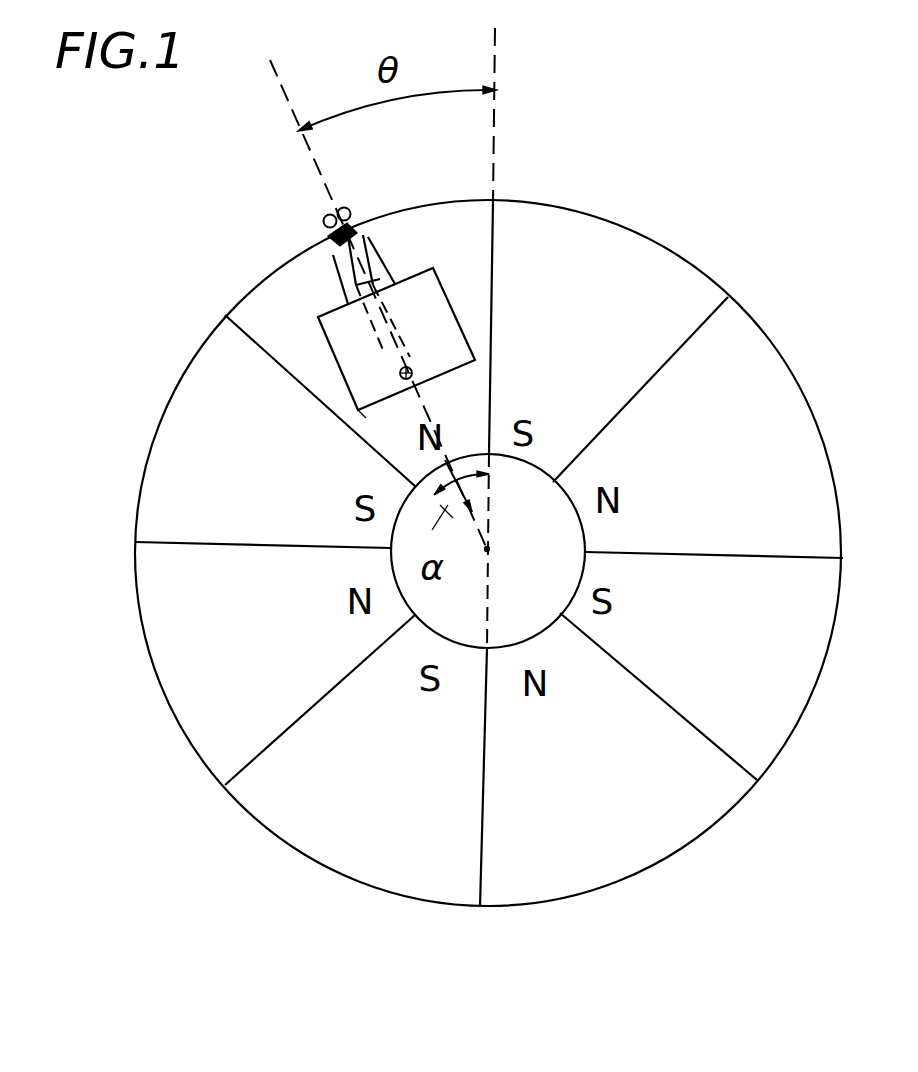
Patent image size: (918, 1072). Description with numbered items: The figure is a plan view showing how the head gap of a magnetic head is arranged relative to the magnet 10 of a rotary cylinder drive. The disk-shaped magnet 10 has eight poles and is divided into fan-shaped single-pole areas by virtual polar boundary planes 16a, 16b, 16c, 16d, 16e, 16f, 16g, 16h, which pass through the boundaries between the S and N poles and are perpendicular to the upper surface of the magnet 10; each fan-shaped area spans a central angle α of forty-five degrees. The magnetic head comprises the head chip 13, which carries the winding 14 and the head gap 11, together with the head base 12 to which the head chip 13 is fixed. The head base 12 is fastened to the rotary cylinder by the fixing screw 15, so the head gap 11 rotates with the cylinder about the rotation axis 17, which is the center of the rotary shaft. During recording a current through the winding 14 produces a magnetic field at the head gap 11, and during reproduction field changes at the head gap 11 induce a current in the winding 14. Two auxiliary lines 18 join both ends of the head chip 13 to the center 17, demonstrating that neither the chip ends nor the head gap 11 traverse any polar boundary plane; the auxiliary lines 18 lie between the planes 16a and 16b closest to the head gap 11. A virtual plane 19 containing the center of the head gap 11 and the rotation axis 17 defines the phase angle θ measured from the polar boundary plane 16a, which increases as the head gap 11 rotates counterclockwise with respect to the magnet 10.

The magnet 10 is at (302, 832).
The head gap 11 is at (325, 213).
The head base 12 is at (333, 327).
The head chip 13 is at (333, 248).
The winding 14 is at (330, 230).
The fixing screw 15 is at (358, 418).
The polar boundary plane 16a is at (500, 287).
The polar boundary plane 16b is at (267, 353).
The polar boundary plane 16c is at (203, 545).
The polar boundary plane 16d is at (288, 733).
The polar boundary plane 16e is at (495, 808).
The polar boundary plane 16f is at (730, 722).
The polar boundary plane 16g is at (757, 555).
The polar boundary plane 16h is at (682, 348).
The rotation axis 17 is at (490, 549).
The auxiliary lines 18 is at (397, 323).
The virtual plane 19 is at (277, 75).